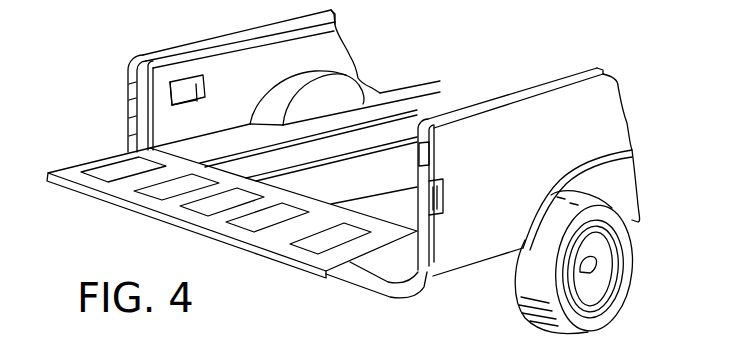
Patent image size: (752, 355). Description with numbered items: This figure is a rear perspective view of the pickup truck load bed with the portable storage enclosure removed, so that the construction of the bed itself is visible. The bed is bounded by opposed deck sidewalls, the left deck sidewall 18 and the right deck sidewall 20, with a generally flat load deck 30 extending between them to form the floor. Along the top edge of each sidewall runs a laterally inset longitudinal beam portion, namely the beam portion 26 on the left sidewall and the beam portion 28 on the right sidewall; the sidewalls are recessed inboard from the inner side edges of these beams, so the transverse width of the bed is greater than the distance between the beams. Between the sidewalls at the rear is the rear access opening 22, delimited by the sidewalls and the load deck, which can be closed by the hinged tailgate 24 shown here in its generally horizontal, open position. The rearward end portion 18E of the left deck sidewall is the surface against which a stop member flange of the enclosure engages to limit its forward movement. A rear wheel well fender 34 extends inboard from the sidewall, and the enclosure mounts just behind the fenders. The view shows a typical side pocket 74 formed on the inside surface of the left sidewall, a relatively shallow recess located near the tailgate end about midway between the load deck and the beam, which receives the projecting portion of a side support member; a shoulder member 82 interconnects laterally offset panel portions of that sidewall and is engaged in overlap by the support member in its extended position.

The left deck sidewall 18 is at (320, 46).
The end portion of the left deck sidewall 18E is at (128, 86).
The right deck sidewall 20 is at (583, 120).
The rear access opening 22 is at (150, 136).
The tailgate 24 is at (172, 229).
The longitudinal beam portion 26 is at (213, 40).
The longitudinal beam portion 28 is at (521, 94).
The load deck 30 is at (394, 123).
The rear wheel well fender 34 is at (333, 94).
The side pocket 74 is at (206, 90).
The shoulder member 82 is at (190, 105).